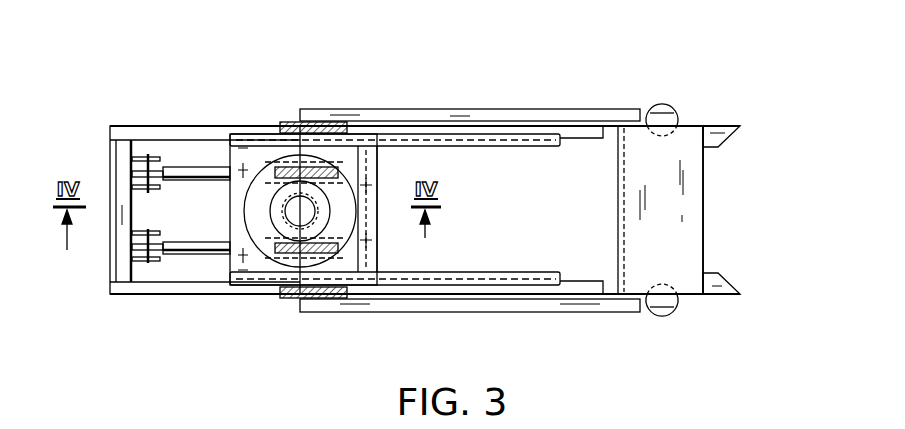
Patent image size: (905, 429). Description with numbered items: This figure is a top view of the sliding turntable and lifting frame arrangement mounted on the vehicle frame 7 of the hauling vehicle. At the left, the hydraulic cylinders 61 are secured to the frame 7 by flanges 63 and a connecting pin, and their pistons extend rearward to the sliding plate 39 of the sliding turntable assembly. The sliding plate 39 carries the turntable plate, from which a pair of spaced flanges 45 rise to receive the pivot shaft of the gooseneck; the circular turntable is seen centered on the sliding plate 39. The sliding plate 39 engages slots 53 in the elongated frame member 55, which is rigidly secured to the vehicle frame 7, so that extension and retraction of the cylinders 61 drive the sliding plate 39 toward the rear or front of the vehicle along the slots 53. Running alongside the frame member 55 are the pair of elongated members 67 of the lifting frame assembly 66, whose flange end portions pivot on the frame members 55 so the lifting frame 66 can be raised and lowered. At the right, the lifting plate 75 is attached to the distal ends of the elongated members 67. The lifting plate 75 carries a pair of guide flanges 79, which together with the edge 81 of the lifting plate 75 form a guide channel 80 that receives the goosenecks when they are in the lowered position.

The vehicle frame 7 is at (110, 150).
The sliding plate 39 is at (237, 217).
The flanges 45 is at (290, 167).
The slots 53 is at (560, 146).
The elongated frame member 55 is at (513, 272).
The hydraulic cylinders 61 is at (188, 166).
The flanges 63 is at (141, 156).
The lifting frame assembly 66 is at (692, 90).
The elongated members 67 is at (505, 111).
The lifting plate 75 is at (685, 225).
The guide flanges 79 is at (740, 122).
The guide channel 80 is at (728, 157).
The edge 81 is at (704, 190).